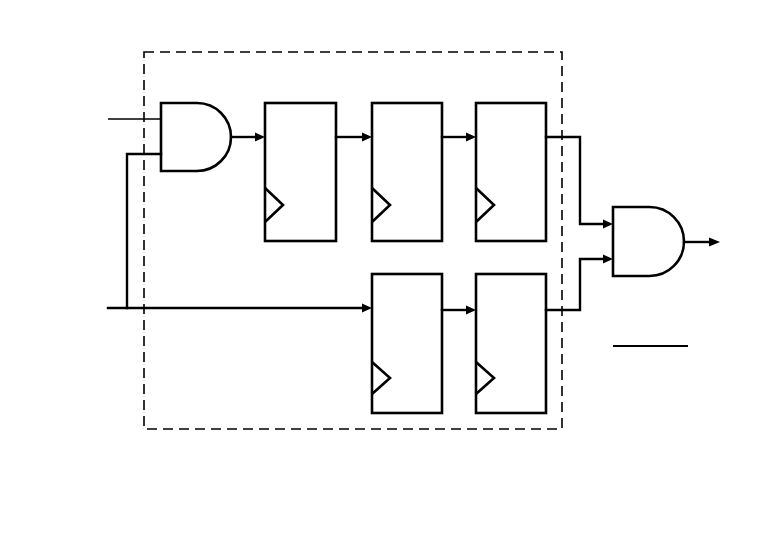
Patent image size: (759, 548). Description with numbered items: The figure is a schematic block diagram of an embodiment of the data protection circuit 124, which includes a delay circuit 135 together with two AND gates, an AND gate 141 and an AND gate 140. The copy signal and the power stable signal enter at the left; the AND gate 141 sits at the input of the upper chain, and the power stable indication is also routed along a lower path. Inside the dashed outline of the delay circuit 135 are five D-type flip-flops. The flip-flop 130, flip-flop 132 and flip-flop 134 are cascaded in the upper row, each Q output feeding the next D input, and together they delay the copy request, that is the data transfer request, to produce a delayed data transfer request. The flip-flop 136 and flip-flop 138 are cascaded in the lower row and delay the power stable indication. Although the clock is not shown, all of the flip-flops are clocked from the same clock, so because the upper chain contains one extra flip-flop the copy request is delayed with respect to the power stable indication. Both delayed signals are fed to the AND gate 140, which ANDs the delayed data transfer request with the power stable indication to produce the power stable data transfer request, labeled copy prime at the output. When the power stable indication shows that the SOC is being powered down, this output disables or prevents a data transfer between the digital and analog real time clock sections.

The data protection circuit 124 is at (421, 240).
The delay circuit 135 is at (438, 84).
The AND gate 141 is at (177, 148).
The flip-flop 130 is at (282, 181).
The flip-flop 132 is at (388, 181).
The flip-flop 134 is at (492, 181).
The flip-flop 136 is at (388, 355).
The flip-flop 138 is at (492, 355).
The AND gate 140 is at (629, 252).